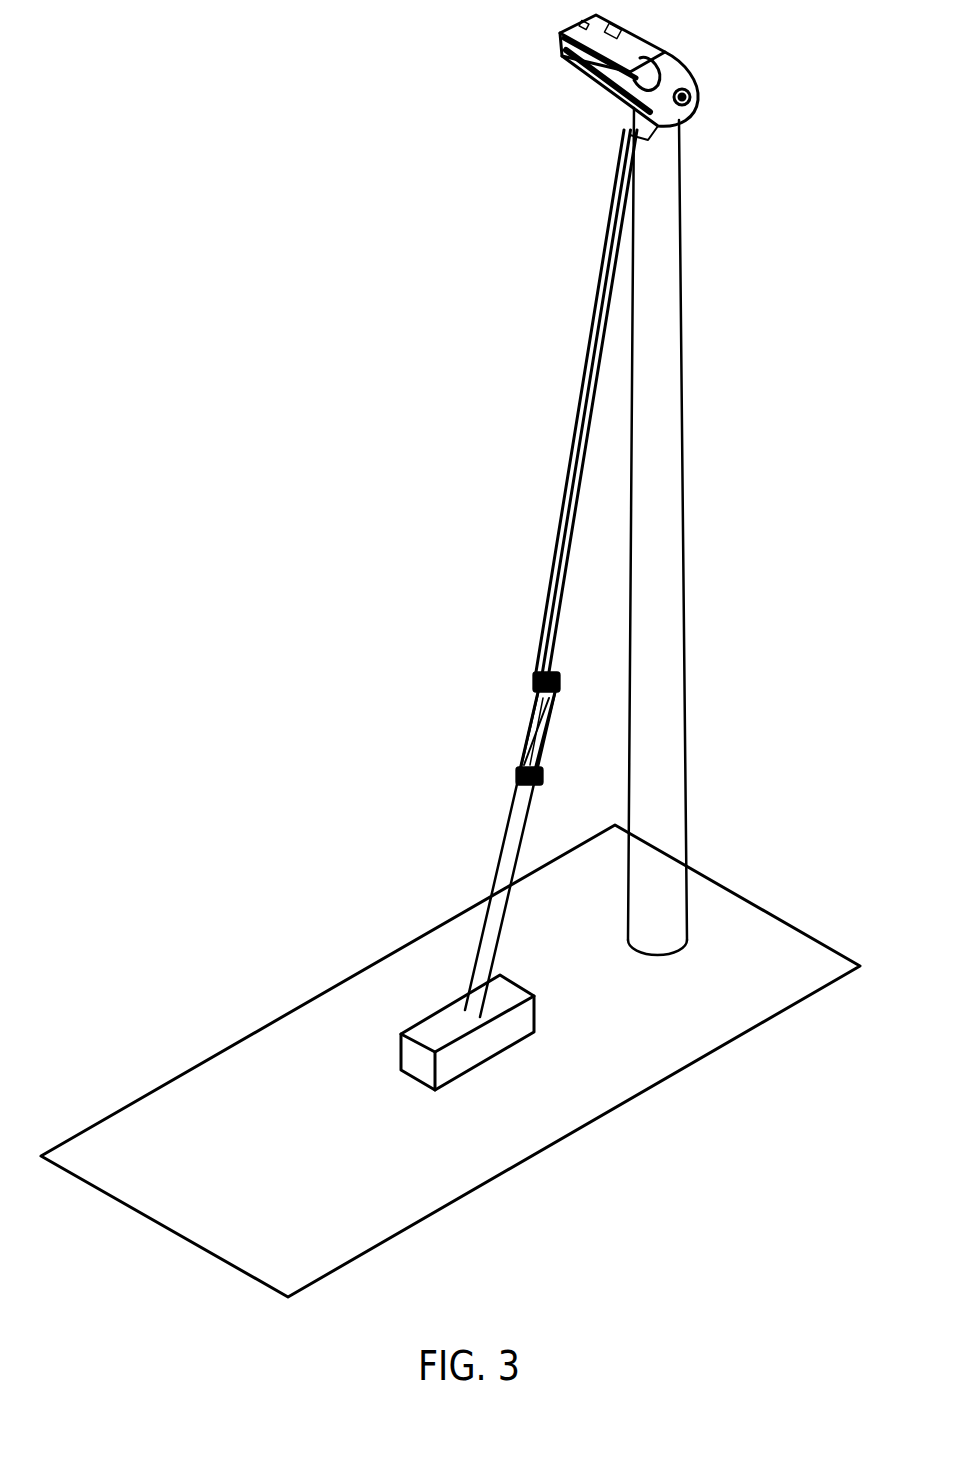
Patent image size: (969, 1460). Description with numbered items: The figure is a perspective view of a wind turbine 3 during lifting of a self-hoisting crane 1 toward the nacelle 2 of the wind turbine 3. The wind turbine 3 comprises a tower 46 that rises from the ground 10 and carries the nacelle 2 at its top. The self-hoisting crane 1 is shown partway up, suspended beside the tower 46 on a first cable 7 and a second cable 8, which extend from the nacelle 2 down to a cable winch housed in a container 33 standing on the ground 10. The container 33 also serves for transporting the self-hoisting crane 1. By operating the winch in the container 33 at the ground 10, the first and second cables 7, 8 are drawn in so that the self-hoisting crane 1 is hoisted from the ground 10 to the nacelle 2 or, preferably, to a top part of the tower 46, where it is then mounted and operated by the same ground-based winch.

The self-hoisting crane 1 is at (533, 695).
The nacelle 2 is at (678, 68).
The wind turbine 3 is at (750, 371).
The tower 46 is at (664, 503).
The first cable 7 is at (502, 830).
The second cable 8 is at (530, 805).
The container 33 is at (450, 1065).
The ground 10 is at (603, 1052).